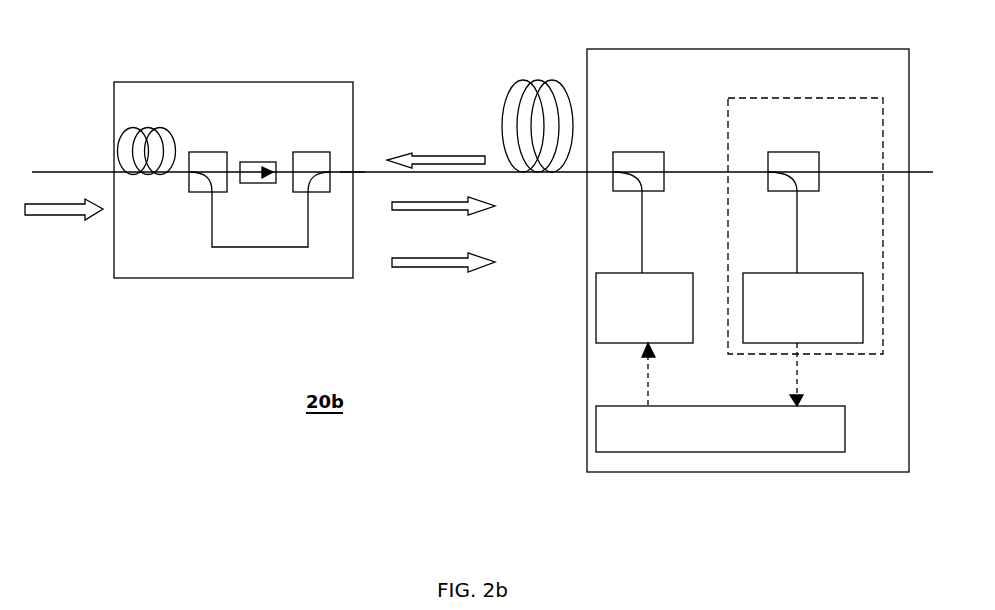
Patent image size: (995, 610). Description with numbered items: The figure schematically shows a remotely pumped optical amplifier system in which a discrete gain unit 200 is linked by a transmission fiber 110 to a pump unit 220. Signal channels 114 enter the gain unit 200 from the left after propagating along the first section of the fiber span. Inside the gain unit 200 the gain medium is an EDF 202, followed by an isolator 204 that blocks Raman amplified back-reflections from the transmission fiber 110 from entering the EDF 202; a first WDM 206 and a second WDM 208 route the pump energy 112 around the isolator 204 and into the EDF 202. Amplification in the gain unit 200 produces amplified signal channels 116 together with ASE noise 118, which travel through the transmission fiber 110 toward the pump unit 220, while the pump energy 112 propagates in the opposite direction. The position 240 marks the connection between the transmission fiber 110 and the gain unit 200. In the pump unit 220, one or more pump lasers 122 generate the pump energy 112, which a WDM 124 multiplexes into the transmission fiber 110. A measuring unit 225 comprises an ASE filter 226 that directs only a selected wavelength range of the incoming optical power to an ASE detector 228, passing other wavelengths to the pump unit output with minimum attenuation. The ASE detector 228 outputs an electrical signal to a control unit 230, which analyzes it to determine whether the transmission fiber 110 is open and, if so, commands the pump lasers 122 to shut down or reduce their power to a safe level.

The transmission fiber 110 is at (543, 82).
The pump energy 112 is at (423, 135).
The signal channels 114 is at (40, 202).
The amplified signal channels 116 is at (398, 200).
The ASE noise 118 is at (430, 270).
The pump lasers 122 is at (655, 273).
The wavelength division multiplexer (WDM) 124 is at (635, 152).
The gain unit 200 is at (354, 122).
The EDF 202 is at (143, 130).
The isolator 204 is at (258, 162).
The first WDM 206 is at (303, 152).
The second WDM 208 is at (198, 152).
The pump unit 220 is at (783, 49).
The measuring unit 225 is at (780, 98).
The ASE filter 226 is at (790, 152).
The ASE detector 228 is at (810, 273).
The control unit 230 is at (718, 406).
The position 240 is at (353, 172).